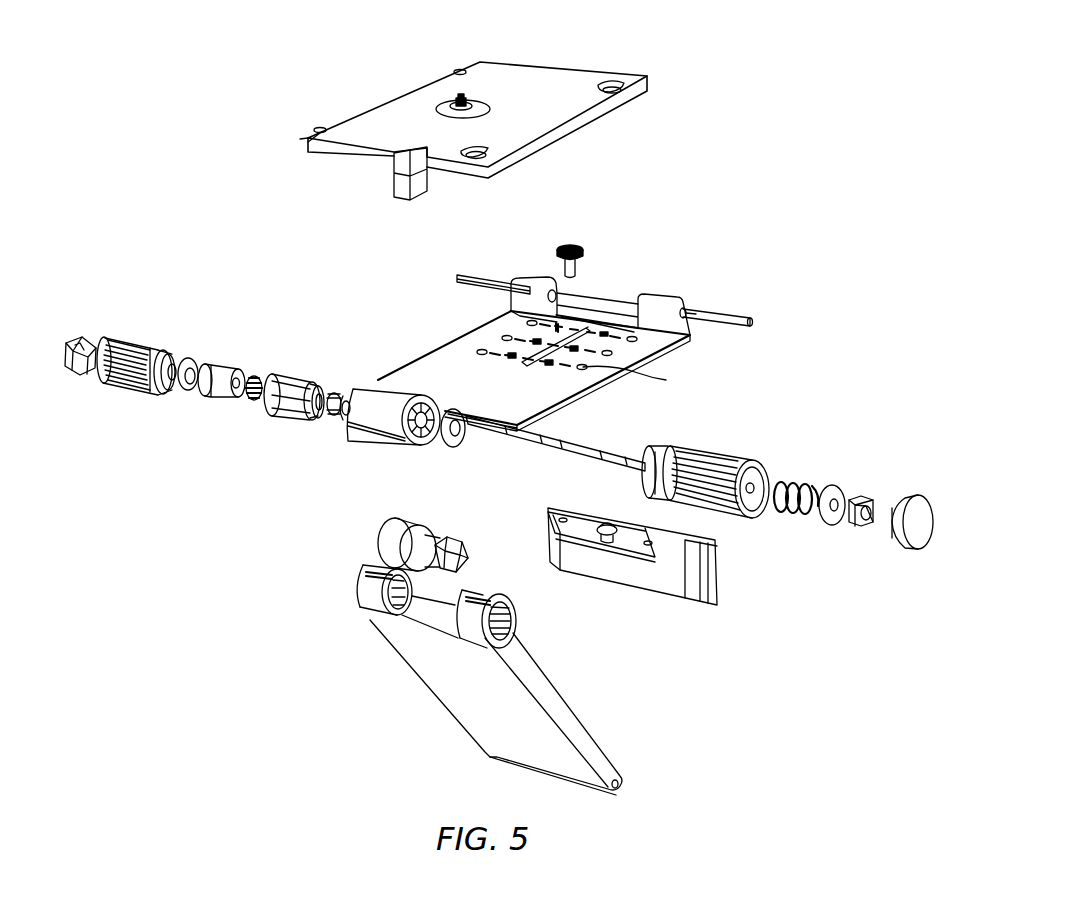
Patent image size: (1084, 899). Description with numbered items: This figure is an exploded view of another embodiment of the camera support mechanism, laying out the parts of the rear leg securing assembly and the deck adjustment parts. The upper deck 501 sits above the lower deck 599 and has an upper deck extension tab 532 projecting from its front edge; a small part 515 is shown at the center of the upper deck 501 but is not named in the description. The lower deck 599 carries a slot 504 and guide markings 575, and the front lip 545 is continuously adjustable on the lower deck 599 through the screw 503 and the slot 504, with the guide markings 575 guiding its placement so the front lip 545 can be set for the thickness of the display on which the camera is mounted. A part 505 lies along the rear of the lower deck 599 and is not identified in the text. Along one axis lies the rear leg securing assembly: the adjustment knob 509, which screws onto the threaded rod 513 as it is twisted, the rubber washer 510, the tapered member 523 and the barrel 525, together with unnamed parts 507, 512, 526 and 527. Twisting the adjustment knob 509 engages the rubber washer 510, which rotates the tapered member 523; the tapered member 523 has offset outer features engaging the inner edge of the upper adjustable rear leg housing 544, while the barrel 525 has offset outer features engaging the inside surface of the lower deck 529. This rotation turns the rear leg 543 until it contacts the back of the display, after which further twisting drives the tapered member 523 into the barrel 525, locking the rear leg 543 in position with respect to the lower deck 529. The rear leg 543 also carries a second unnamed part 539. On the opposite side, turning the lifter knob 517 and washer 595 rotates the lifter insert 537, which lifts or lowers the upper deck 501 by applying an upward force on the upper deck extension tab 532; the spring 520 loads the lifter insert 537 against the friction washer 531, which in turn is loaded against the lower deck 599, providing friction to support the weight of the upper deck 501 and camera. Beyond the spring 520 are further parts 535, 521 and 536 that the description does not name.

The upper deck 501 is at (551, 60).
The boss 515 is at (460, 104).
The upper deck extension tab 532 is at (393, 183).
The screw 503 is at (572, 240).
The slot 504 is at (590, 326).
The rod 505 is at (738, 312).
The lower deck 599 is at (410, 370).
The guide markings 575 is at (642, 378).
The nut 507 is at (80, 336).
The adjustment knob 509 is at (139, 341).
The rubber washer 510 is at (192, 362).
The tapered member 523 is at (217, 406).
The threaded insert 512 is at (256, 379).
The barrel 525 is at (281, 423).
The spacer 526 is at (332, 423).
The washer 527 is at (345, 396).
The lower deck 529 is at (382, 446).
The friction washer 531 is at (457, 450).
The threaded rod 513 is at (592, 447).
The washer 595 is at (660, 445).
The lifter knob 517 is at (736, 456).
The spring 520 is at (800, 483).
The washer 535 is at (834, 524).
The nut 521 is at (858, 495).
The cap 536 is at (911, 496).
The lifter insert 537 is at (438, 536).
The upper adjustable rear leg housing 544 is at (358, 588).
The sleeve 539 is at (515, 618).
The rear leg 543 is at (450, 714).
The front lip 545 is at (646, 584).